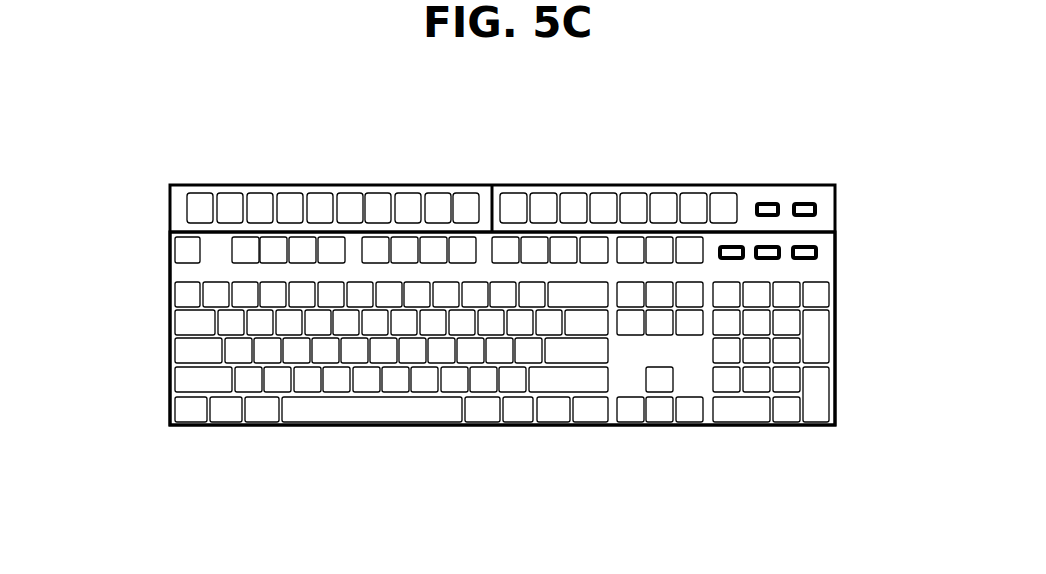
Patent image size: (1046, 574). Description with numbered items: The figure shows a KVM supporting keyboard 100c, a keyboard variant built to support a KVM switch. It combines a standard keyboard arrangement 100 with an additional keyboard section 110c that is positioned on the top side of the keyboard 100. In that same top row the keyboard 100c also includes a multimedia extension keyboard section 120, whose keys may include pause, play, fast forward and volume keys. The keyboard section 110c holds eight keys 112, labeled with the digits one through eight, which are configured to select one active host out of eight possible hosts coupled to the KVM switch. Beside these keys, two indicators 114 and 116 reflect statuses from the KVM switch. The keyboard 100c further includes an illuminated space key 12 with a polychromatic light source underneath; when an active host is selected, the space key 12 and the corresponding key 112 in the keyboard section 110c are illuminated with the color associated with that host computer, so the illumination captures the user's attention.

The KVM supporting keyboard 100c is at (148, 160).
The standard keyboard arrangement 100 is at (450, 381).
The multimedia extension keyboard section 120 is at (332, 186).
The keys 112 is at (510, 188).
The keyboard section 110c is at (830, 174).
The indicator 114 is at (783, 199).
The indicator 116 is at (824, 208).
The illuminated space key 12 is at (380, 429).